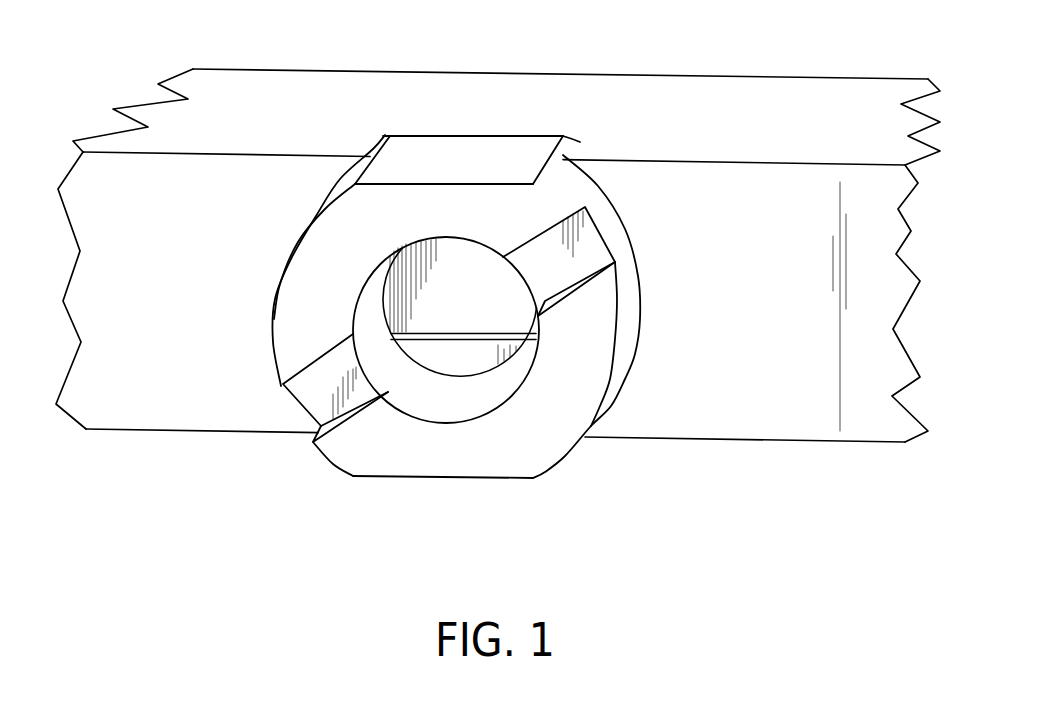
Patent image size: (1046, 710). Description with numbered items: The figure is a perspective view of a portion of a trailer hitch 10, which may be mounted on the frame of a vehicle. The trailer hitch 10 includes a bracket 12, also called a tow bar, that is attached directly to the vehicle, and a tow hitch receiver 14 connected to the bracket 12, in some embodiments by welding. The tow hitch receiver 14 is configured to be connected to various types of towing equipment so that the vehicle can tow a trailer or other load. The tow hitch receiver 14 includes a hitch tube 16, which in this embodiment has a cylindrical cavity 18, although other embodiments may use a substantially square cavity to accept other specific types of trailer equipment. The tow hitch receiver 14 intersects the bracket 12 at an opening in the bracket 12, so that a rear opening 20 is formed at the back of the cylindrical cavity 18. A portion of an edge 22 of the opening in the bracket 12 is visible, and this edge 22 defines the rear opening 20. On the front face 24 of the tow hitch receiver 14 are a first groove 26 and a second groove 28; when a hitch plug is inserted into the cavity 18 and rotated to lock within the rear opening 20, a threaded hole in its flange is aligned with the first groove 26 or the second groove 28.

The trailer hitch 10 is at (213, 508).
The bracket 12 is at (782, 398).
The tow hitch receiver 14 is at (572, 464).
The hitch tube 16 is at (442, 153).
The cylindrical cavity 18 is at (470, 403).
The rear opening 20 is at (456, 285).
The edge 22 is at (488, 335).
The front face 24 is at (320, 263).
The first groove 26 is at (594, 246).
The second groove 28 is at (332, 388).